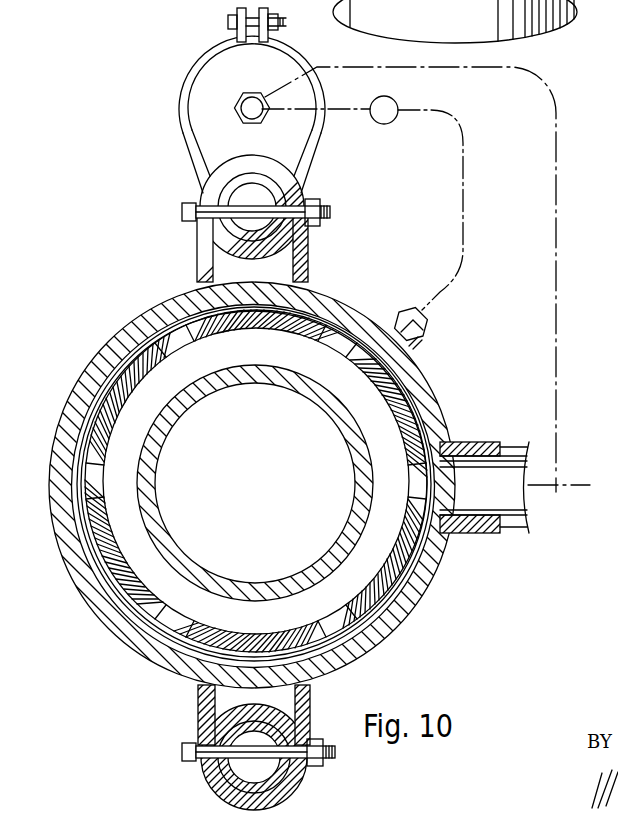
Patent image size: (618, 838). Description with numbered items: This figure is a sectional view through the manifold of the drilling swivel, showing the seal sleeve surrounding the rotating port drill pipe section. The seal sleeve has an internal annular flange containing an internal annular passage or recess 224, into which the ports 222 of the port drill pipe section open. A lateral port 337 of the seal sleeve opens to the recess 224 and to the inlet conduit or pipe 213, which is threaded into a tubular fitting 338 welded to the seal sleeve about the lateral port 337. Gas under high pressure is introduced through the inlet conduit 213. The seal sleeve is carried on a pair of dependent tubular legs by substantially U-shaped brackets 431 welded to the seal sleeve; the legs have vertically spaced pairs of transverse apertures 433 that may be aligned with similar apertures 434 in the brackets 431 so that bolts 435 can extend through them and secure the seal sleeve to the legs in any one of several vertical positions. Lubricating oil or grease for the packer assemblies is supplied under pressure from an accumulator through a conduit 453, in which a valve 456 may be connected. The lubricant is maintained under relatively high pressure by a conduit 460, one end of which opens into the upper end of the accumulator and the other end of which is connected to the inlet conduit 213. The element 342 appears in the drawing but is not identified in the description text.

The housing 342 is at (523, 28).
The valve 456 is at (396, 102).
The conduit 460 is at (558, 163).
The conduit 453 is at (464, 220).
The apertures 434 is at (201, 191).
The transverse apertures 433 is at (304, 193).
The bolts 435 is at (326, 213).
The U-shaped brackets 431 is at (309, 259).
The tubular fitting 338 is at (485, 442).
The lateral port 337 is at (448, 498).
The inlet conduit 213 is at (509, 533).
The ports 222 is at (417, 493).
The internal annular passage 224 is at (414, 576).